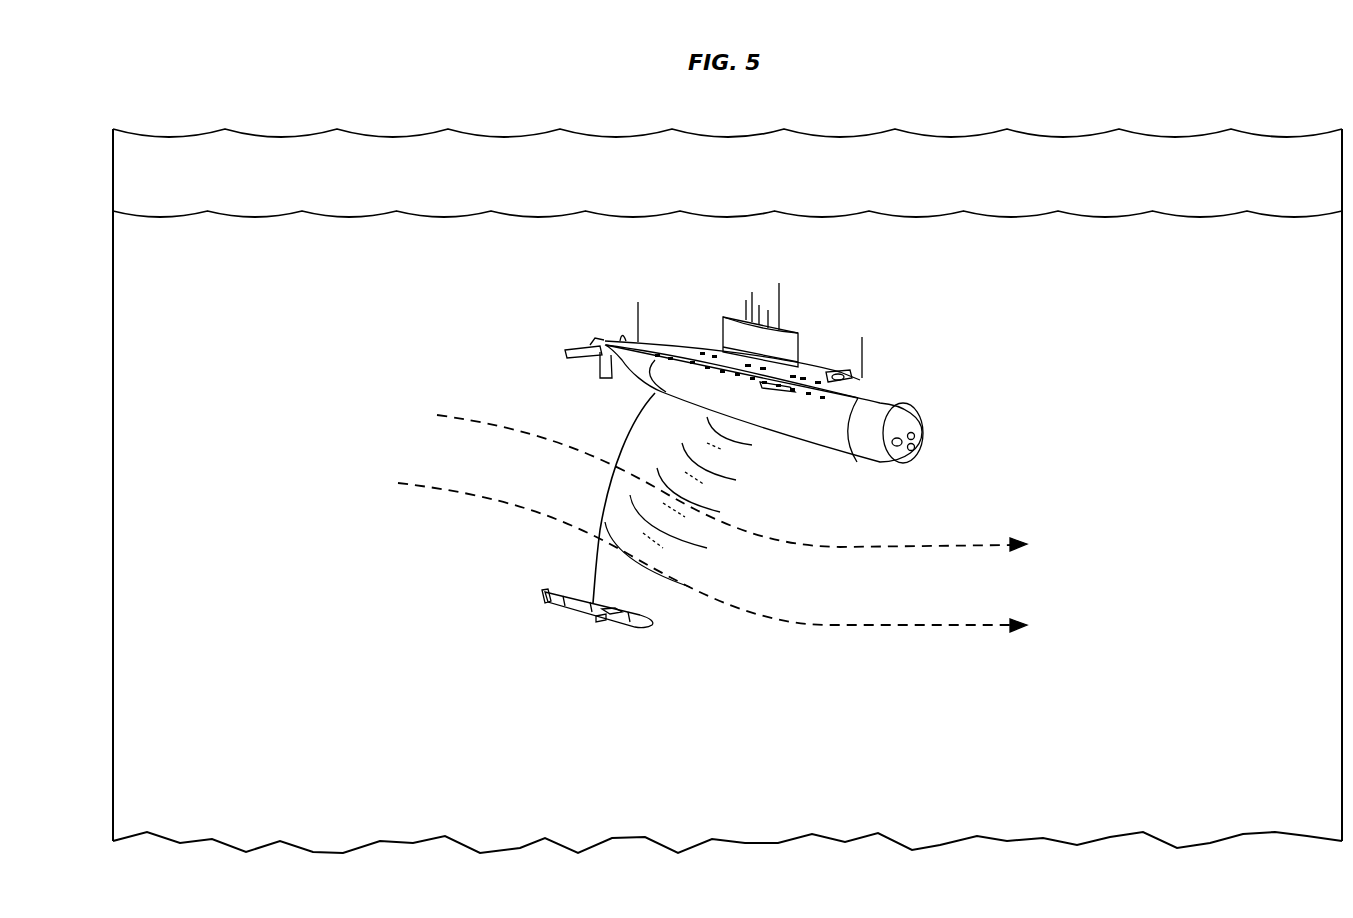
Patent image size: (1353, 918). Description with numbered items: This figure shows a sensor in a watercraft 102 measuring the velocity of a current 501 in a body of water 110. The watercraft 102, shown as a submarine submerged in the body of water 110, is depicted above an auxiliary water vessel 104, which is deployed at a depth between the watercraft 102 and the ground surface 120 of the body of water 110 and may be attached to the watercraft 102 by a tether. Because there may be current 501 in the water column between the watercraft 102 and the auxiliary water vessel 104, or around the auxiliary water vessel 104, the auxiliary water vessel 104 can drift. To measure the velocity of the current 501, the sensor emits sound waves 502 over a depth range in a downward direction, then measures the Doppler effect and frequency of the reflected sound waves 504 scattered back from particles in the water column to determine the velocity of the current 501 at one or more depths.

The body of water 110 is at (1046, 160).
The ground surface 120 is at (1010, 840).
The watercraft 102 is at (893, 405).
The auxiliary water vessel 104 is at (572, 603).
The reflected sound waves 504 is at (728, 455).
The sound waves 502 is at (710, 502).
The current 501 is at (1036, 537).